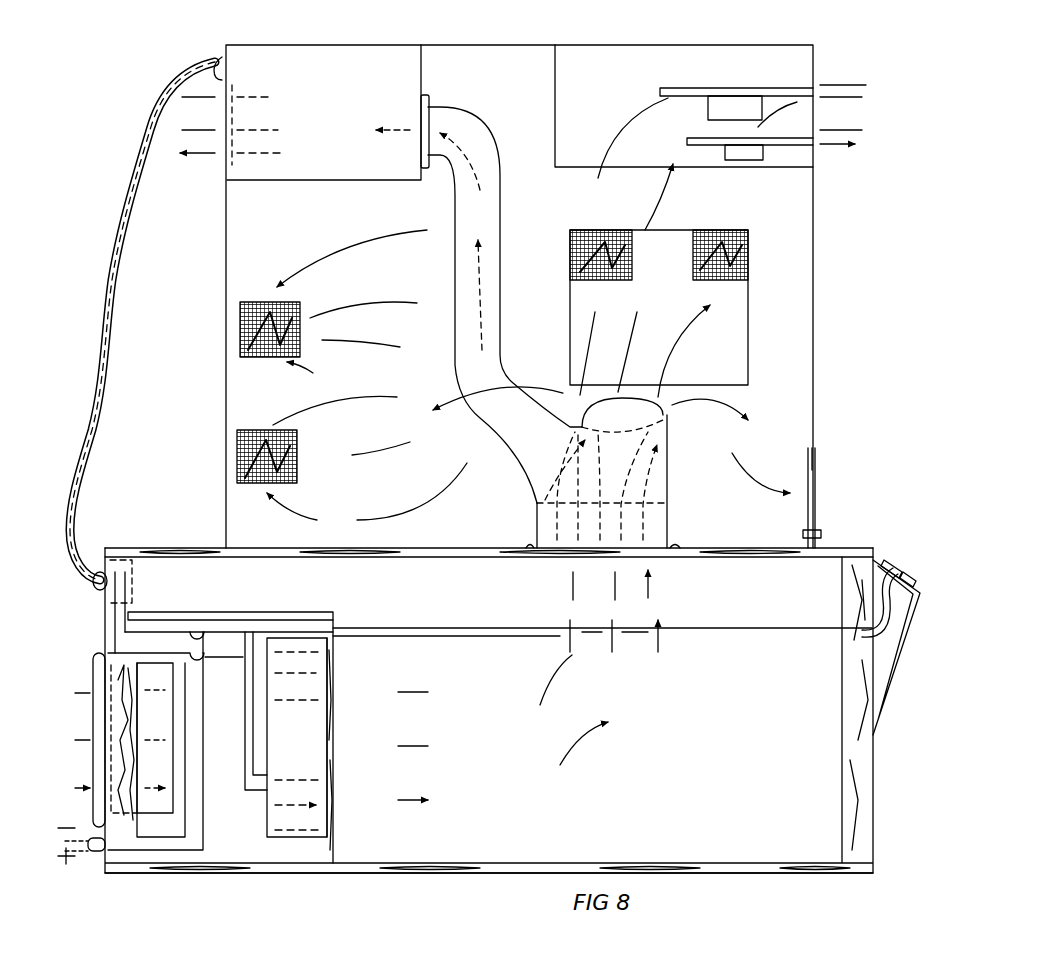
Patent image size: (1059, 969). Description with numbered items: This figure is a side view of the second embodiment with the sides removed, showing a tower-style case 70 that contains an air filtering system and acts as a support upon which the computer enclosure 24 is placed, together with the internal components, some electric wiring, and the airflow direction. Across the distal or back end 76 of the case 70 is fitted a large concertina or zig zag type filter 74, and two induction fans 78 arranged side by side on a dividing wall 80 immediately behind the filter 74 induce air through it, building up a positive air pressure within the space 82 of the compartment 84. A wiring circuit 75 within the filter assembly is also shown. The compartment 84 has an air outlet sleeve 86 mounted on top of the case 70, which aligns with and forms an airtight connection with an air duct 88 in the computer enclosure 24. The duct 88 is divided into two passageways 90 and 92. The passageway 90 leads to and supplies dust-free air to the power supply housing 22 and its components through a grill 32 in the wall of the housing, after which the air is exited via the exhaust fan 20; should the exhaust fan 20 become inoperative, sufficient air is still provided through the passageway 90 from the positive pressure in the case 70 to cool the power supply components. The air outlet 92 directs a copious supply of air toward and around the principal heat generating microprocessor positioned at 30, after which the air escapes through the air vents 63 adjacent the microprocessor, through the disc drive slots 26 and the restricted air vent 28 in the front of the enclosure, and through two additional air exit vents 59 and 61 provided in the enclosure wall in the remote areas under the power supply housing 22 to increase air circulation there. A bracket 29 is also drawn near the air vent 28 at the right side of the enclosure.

The exhaust fan 20 is at (235, 146).
The power supply cage 22 is at (350, 181).
The computer enclosure 24 is at (487, 44).
The disc slots 26 is at (790, 88).
The air vent 28 is at (805, 500).
The bracket 29 is at (816, 470).
The microprocessor location 30 is at (682, 325).
The grill 32 is at (428, 115).
The air vent 59 is at (297, 452).
The air vent 61 is at (300, 304).
The air vents 63 is at (620, 232).
The tower-style case 70 is at (196, 548).
The concertina filter 74 is at (147, 770).
The wiring circuit 75 is at (207, 800).
The back end 76 is at (105, 632).
The induction fans 78 is at (307, 722).
The dividing wall 80 is at (333, 790).
The space 82 is at (773, 720).
The compartment 84 is at (788, 815).
The air outlet sleeve 86 is at (602, 609).
The air duct 88 is at (668, 490).
The passageway 90 is at (455, 282).
The air outlet 92 is at (665, 410).